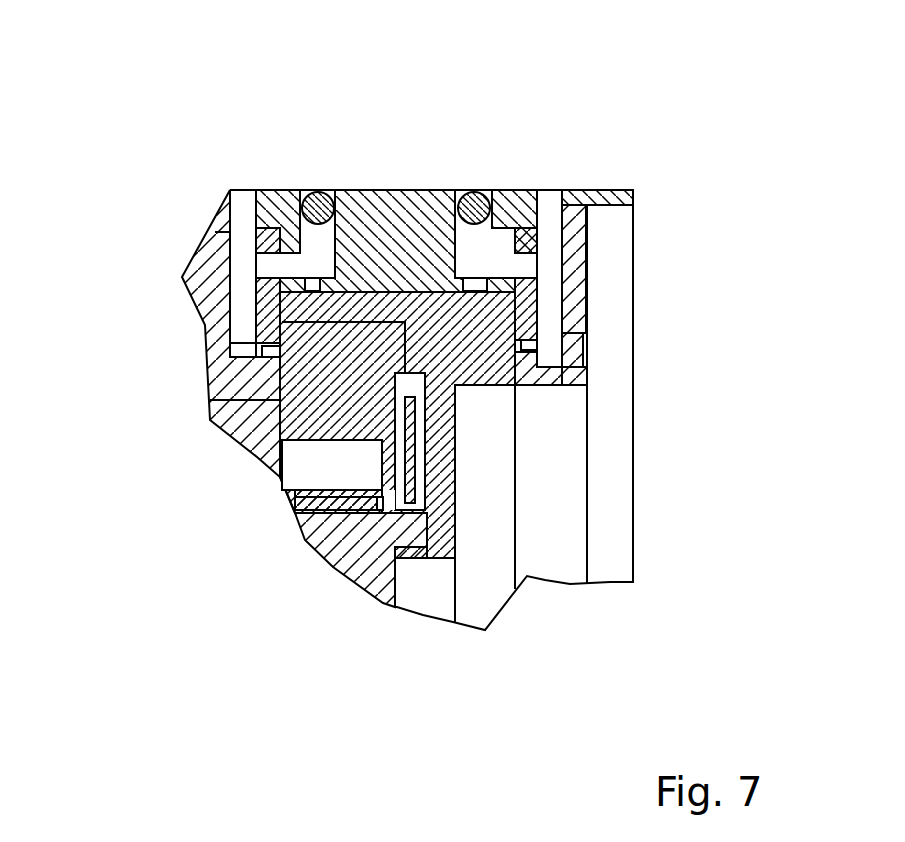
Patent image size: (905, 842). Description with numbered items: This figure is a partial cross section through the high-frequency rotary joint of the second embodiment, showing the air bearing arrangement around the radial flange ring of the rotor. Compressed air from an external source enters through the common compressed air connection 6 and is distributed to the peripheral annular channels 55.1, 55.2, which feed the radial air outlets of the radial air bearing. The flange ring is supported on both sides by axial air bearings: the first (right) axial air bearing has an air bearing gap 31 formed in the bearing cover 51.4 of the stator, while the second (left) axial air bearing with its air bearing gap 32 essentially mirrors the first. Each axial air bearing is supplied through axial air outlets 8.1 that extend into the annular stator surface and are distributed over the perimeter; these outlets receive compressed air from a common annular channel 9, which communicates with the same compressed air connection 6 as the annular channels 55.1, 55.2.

The compressed air connection 6 is at (242, 190).
The annular channel 55.1 is at (313, 248).
The annular channel 55.2 is at (468, 253).
The bearing cover 51.4 is at (585, 250).
The air bearing gap 31 is at (515, 316).
The air bearing gap 32 is at (273, 310).
The annular channel 9 is at (265, 355).
The axial air outlets 8.1 is at (275, 353).